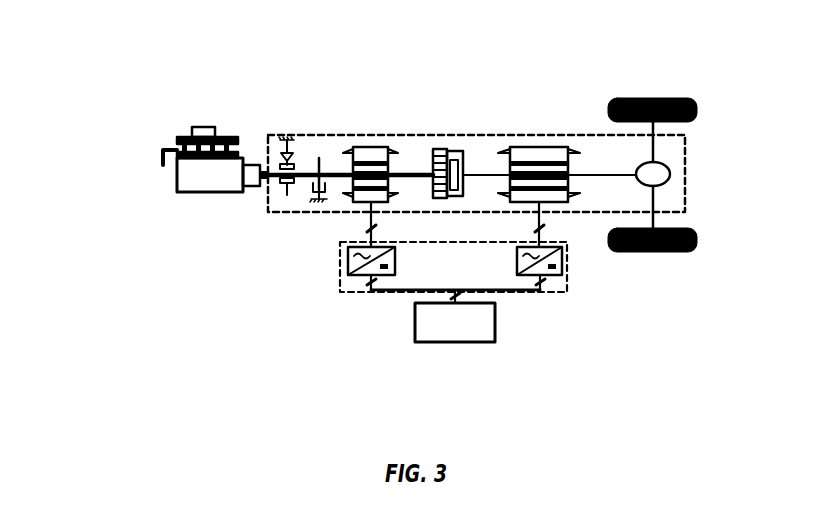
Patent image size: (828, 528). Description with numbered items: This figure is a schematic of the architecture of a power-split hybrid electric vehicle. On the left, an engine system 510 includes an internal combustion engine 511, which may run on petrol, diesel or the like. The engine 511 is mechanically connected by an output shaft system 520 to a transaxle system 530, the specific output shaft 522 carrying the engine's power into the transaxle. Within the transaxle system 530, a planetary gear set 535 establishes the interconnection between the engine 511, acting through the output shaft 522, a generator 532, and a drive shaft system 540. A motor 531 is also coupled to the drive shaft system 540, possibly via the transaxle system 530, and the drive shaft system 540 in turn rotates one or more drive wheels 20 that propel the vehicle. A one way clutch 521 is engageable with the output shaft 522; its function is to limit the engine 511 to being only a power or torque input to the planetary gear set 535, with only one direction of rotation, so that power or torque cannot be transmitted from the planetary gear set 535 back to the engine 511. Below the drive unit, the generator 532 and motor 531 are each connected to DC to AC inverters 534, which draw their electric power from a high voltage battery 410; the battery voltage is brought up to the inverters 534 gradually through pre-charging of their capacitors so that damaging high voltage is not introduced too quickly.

The drive wheels 20 is at (666, 95).
The high voltage battery 410 is at (455, 327).
The engine system 510 is at (174, 186).
The internal combustion engine 511 is at (188, 197).
The output shaft system 520 is at (308, 168).
The one way clutch 521 is at (287, 196).
The output shaft 522 is at (263, 183).
The transaxle system 530 is at (478, 150).
The motor 531 is at (538, 145).
The generator 532 is at (360, 145).
The inverters 534 is at (359, 278).
The planetary gear set 535 is at (457, 204).
The drive shaft system 540 is at (587, 160).